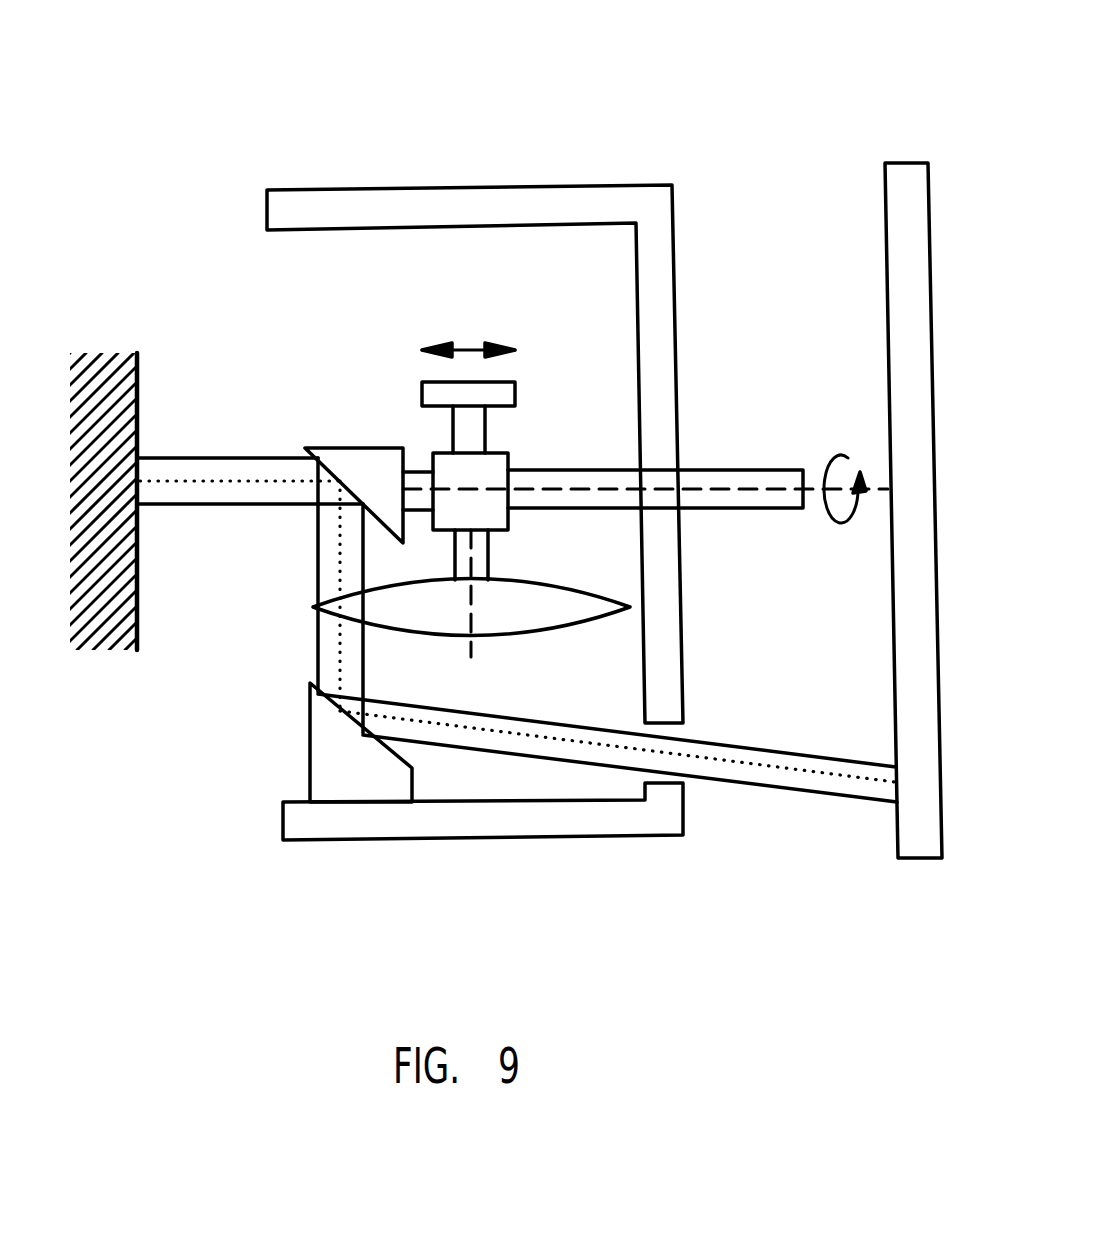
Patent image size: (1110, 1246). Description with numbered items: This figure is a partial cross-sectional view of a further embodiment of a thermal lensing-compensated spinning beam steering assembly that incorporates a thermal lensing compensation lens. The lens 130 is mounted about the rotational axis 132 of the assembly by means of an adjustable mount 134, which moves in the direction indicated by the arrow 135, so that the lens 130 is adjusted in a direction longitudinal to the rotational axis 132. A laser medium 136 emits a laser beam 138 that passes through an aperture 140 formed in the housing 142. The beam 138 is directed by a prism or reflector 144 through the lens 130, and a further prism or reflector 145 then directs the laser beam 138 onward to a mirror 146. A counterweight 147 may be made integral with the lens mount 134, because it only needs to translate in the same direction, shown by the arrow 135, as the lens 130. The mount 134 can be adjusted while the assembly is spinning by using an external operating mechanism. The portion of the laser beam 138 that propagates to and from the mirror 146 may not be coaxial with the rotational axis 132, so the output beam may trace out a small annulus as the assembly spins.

The lens 130 is at (570, 630).
The rotational axis 132 is at (830, 487).
The adjustable mount 134 is at (508, 460).
The arrow 135 is at (478, 350).
The laser medium 136 is at (930, 187).
The laser beam 138 is at (190, 460).
The aperture 140 is at (672, 728).
The housing 142 is at (683, 594).
The prism or reflector 144 is at (310, 737).
The prism or reflector 145 is at (397, 447).
The mirror 146 is at (137, 375).
The counterweight 147 is at (515, 396).